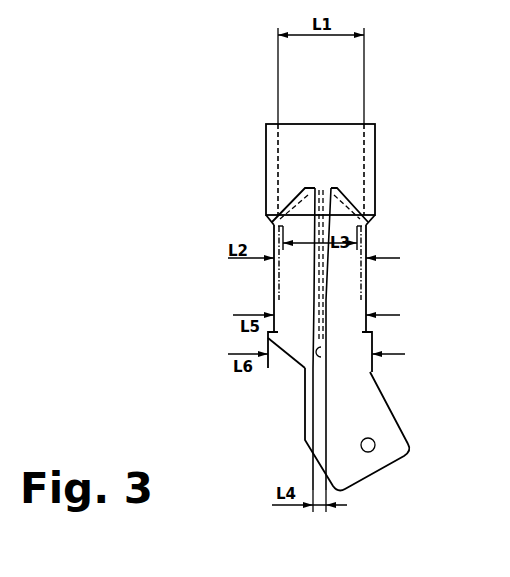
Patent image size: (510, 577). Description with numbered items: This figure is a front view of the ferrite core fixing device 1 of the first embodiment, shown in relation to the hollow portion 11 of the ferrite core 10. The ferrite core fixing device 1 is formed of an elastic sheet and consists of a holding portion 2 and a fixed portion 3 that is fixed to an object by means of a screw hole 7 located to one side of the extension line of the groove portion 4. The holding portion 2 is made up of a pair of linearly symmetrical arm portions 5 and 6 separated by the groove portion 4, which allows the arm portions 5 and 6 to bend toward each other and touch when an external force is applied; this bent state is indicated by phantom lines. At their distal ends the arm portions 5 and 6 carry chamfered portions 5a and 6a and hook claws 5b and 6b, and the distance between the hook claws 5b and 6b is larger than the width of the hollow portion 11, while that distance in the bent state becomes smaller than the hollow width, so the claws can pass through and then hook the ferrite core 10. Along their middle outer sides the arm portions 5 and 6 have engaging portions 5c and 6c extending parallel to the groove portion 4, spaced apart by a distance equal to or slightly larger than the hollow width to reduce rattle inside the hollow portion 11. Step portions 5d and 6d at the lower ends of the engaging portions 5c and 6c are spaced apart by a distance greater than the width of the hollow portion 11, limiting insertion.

The ferrite core fixing device 1 is at (290, 402).
The holding portion 2 is at (200, 251).
The fixed portion 3 is at (406, 432).
The groove portion 4 is at (322, 352).
The arm portion 5 is at (292, 300).
The chamfered portion 5a is at (300, 186).
The hook claw 5b is at (270, 225).
The engaging portion 5c is at (273, 275).
The step portion 5d is at (268, 338).
The arm portion 6 is at (350, 298).
The chamfered portion 6a is at (347, 186).
The hook claw 6b is at (372, 227).
The engaging portion 6c is at (366, 272).
The step portion 6d is at (372, 334).
The screw hole 7 is at (373, 451).
The ferrite core 10 is at (375, 140).
The hollow portion 11 is at (318, 122).